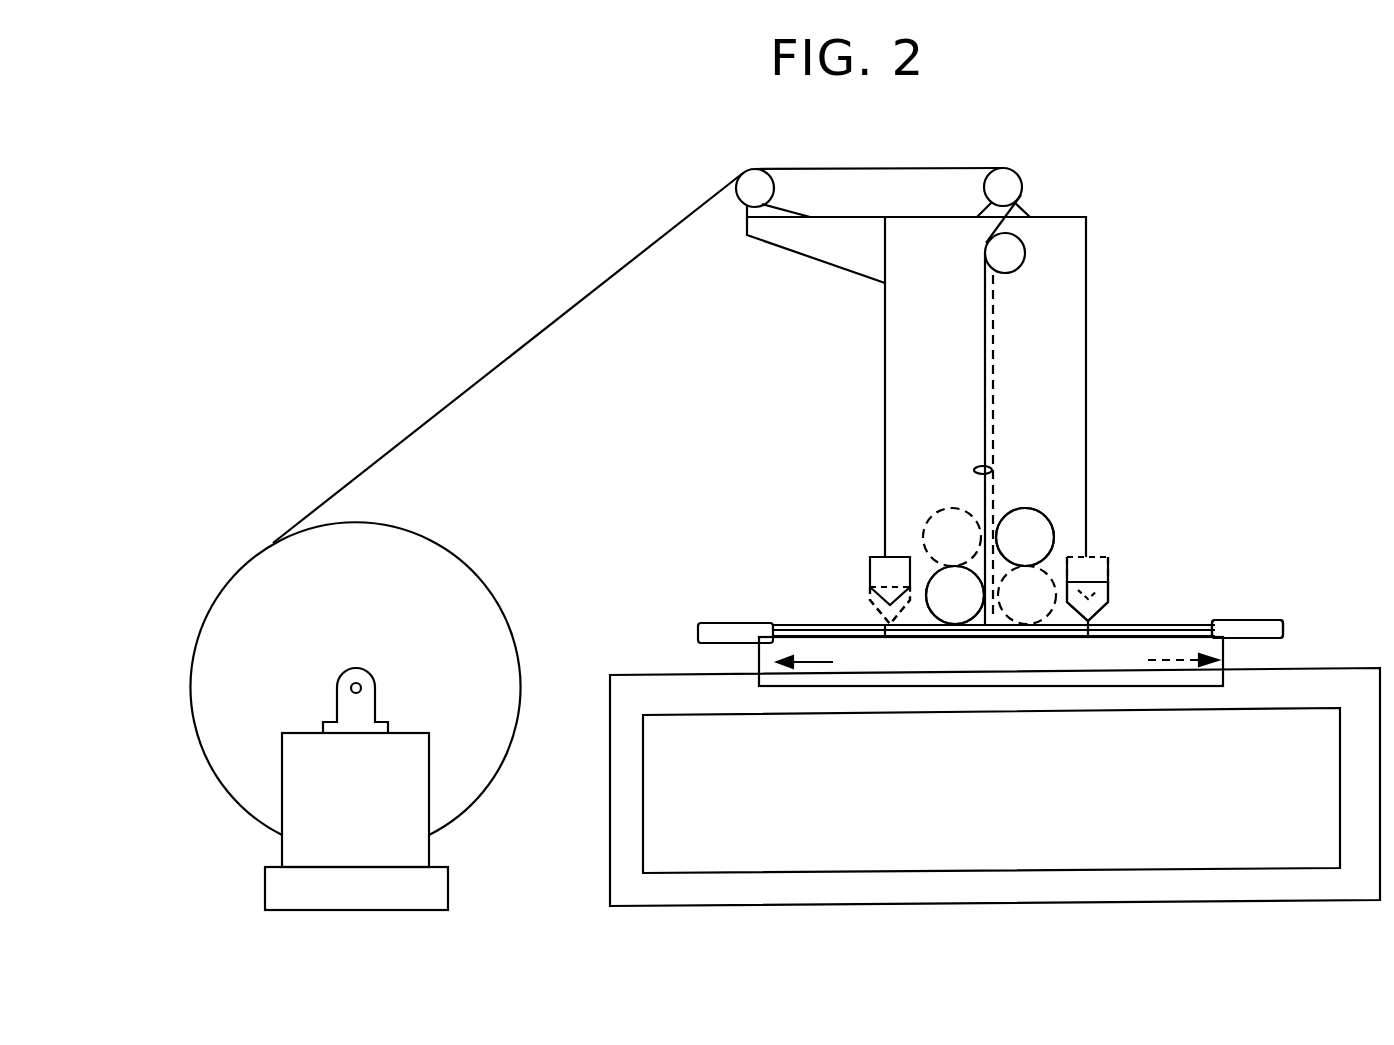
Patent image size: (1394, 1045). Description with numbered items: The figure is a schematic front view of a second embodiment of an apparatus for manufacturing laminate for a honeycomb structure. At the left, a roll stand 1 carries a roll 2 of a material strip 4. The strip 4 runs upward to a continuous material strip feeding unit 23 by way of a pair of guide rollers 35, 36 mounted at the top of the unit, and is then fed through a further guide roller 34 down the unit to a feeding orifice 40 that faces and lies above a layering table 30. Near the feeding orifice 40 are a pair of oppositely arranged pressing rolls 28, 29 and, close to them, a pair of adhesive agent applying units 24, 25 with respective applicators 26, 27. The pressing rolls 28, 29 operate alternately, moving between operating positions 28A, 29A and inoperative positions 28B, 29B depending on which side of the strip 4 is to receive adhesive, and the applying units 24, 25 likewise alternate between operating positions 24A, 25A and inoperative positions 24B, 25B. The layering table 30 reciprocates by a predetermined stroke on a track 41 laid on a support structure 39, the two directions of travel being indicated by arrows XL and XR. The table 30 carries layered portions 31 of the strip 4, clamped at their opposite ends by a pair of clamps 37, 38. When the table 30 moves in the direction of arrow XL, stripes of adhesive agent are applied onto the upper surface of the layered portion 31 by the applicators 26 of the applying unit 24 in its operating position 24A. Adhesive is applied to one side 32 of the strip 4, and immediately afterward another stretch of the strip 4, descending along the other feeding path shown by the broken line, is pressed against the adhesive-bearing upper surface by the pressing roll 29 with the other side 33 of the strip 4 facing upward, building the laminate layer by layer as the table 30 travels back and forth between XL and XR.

The roll stand 1 is at (295, 803).
The roll 2 is at (210, 668).
The material strip 4 is at (528, 342).
The continuous material strip feeding unit 23 is at (1082, 410).
The adhesive agent applying unit 24 is at (1110, 595).
The operating position 24A is at (1097, 623).
The inoperative position 24B is at (1107, 567).
The adhesive agent applying unit 25 is at (855, 600).
The operating position 25A is at (910, 640).
The inoperative position 25B is at (877, 572).
The applicators 26 is at (1088, 623).
The applicators 27 is at (883, 615).
The pressing roll 28 is at (930, 565).
The operating position 28A is at (957, 612).
The inoperative position 28B is at (922, 520).
The pressing roll 29 is at (1037, 532).
The operating position 29A is at (1047, 620).
The inoperative position 29B is at (1062, 533).
The layering table 30 is at (1015, 665).
The layered portion 31 is at (1197, 603).
The side 32 is at (990, 408).
The side 33 is at (990, 472).
The guide roller 34 is at (1012, 255).
The guide roller 35 is at (742, 172).
The guide roller 36 is at (1020, 172).
The clamp 37 is at (1283, 630).
The clamp 38 is at (718, 622).
The support structure 39 is at (712, 698).
The feeding orifice 40 is at (988, 612).
The track 41 is at (650, 673).
The arrow XL is at (807, 663).
The arrow XR is at (1187, 714).